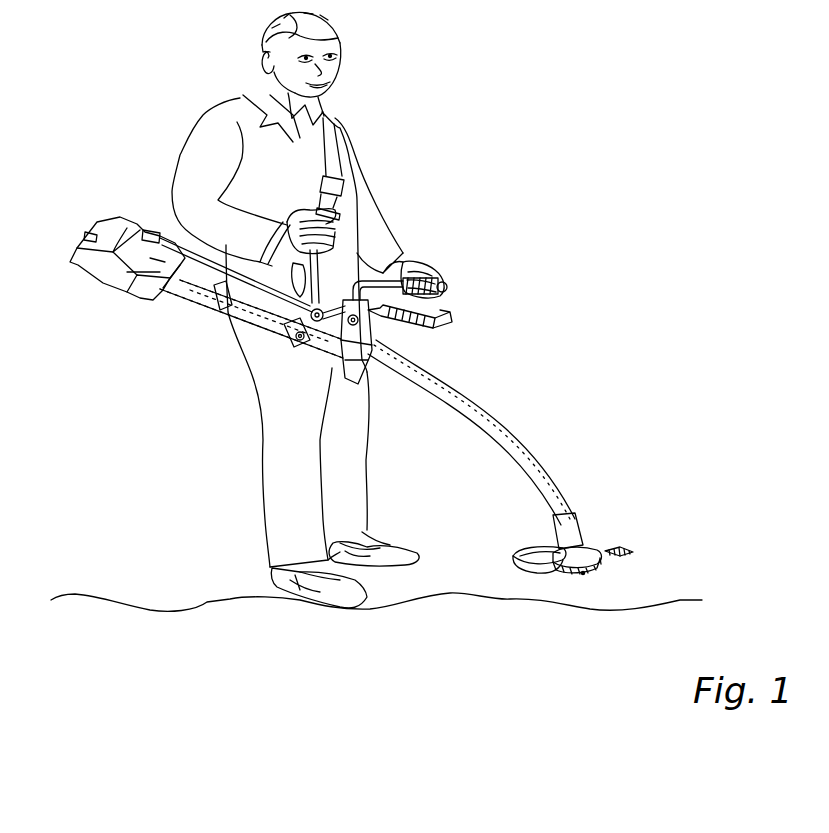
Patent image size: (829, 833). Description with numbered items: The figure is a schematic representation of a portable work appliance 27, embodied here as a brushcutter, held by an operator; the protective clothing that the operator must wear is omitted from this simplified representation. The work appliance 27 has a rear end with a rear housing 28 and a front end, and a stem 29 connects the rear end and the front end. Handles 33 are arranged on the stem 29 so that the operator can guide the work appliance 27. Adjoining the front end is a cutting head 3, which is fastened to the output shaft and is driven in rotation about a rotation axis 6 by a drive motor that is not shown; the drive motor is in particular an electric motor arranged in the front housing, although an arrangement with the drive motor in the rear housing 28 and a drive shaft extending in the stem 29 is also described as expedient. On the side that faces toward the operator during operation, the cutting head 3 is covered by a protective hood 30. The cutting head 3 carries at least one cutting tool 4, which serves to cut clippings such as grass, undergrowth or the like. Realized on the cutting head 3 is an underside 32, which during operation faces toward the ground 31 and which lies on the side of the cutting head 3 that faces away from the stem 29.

The portable work appliance 27 is at (533, 392).
The rear housing 28 is at (103, 268).
The stem 29 is at (542, 472).
The protective hood 30 is at (520, 553).
The cutting head 3 is at (590, 548).
The cutting tool 4 is at (628, 548).
The rotation axis 6 is at (585, 583).
The ground 31 is at (683, 598).
The underside 32 is at (603, 578).
The handles 33 is at (447, 310).